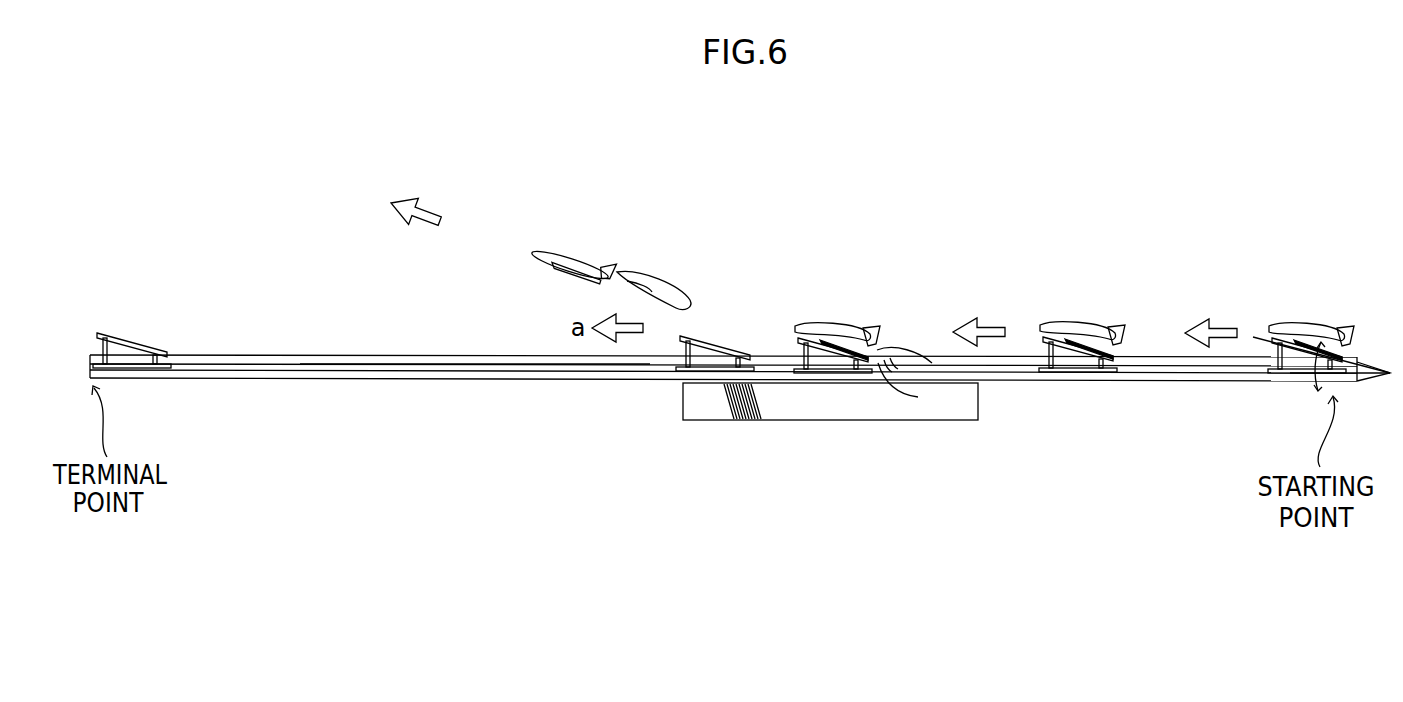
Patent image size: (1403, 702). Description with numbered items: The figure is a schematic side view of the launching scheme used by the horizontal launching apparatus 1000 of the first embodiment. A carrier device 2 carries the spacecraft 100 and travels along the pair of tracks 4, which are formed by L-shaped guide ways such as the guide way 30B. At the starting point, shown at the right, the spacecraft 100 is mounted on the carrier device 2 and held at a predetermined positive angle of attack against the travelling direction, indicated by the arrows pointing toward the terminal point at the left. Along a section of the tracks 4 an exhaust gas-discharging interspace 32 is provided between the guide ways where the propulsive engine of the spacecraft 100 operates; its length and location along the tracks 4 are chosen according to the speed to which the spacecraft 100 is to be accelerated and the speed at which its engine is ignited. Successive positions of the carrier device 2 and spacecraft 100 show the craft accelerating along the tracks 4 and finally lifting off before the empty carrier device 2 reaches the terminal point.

The carrier device 2 is at (148, 349).
The tracks 4 is at (304, 353).
The L-shaped guide way 30B is at (452, 358).
The exhaust gas-discharging interspace 32 is at (842, 408).
The spacecraft 100 is at (585, 253).
The horizontal launching apparatus 1000 is at (1226, 290).